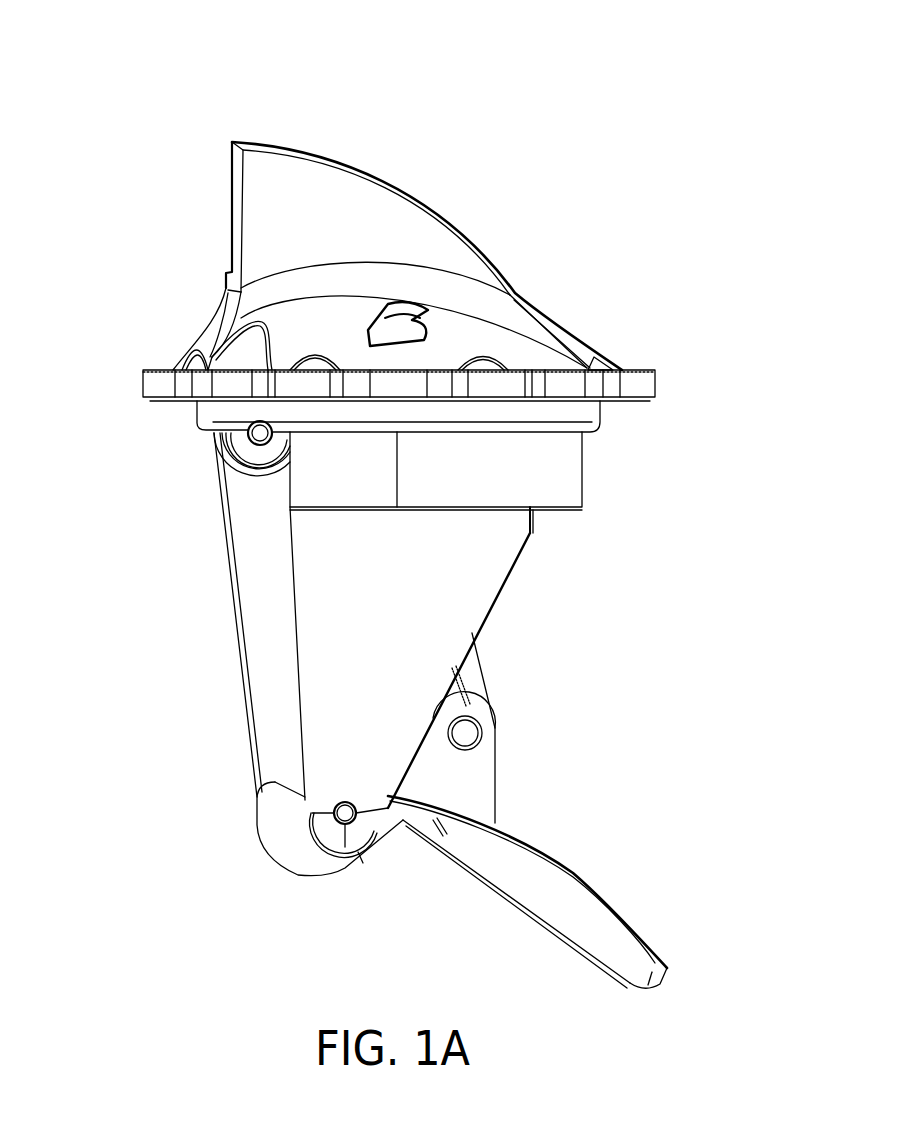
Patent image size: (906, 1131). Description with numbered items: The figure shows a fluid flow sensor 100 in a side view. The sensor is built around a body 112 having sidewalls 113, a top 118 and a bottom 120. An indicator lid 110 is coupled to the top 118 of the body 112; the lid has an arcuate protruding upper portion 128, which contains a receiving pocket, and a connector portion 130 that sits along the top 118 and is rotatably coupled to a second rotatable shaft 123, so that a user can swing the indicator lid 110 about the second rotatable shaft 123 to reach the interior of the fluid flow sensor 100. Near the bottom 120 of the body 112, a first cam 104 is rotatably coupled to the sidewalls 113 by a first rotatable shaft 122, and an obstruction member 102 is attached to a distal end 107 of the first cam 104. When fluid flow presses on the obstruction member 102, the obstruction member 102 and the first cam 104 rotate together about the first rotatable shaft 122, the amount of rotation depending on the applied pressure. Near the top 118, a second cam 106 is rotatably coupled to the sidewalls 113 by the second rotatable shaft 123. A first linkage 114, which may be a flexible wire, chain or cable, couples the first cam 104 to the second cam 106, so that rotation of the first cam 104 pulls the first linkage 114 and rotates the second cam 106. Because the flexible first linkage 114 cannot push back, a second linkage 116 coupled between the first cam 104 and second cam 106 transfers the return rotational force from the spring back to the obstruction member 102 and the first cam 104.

The fluid flow sensor 100 is at (72, 45).
The obstruction member 102 is at (610, 878).
The first cam 104 is at (244, 839).
The second cam 106 is at (204, 457).
The distal end 107 is at (407, 875).
The indicator lid 110 is at (208, 190).
The body 112 is at (487, 588).
The sidewalls 113 is at (508, 549).
The first linkage 114 is at (212, 588).
The second linkage 116 is at (505, 671).
The top 118 is at (614, 411).
The bottom 120 is at (283, 804).
The first rotatable shaft 122 is at (338, 814).
The second rotatable shaft 123 is at (250, 433).
The arcuate portion 128 is at (400, 227).
The connector portion 130 is at (648, 388).